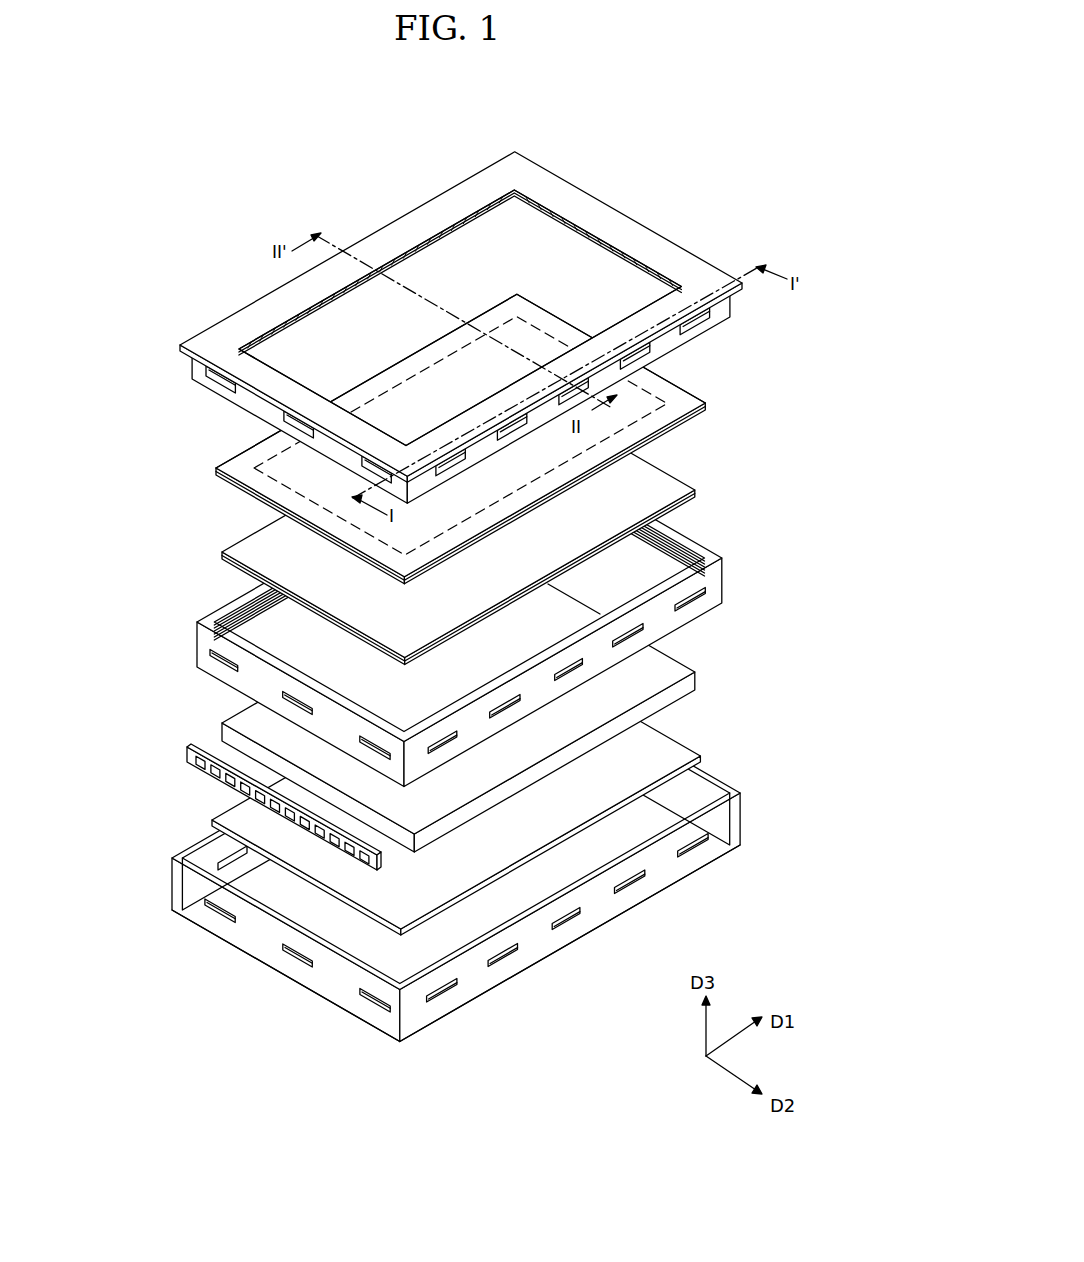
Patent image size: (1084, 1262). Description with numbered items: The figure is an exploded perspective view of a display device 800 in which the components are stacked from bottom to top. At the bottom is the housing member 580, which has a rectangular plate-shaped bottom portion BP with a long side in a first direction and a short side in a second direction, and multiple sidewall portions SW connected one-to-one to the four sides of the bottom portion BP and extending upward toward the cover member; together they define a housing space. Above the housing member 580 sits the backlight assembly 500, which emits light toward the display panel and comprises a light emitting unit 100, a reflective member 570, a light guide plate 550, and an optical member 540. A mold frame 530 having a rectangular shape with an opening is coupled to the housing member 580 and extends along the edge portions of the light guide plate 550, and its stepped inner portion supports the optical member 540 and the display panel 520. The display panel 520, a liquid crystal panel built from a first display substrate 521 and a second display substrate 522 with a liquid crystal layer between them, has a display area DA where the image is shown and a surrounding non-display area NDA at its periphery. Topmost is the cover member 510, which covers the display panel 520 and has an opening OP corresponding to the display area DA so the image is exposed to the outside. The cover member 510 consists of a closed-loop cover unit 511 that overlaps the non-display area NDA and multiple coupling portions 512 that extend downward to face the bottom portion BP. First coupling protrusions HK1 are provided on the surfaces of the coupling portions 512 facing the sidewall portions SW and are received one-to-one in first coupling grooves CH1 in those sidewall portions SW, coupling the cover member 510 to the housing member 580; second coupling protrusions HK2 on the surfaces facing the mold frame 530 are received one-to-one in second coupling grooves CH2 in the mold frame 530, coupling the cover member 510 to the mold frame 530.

The display device 800 is at (607, 175).
The cover member 510 is at (410, 327).
The cover unit 511 is at (203, 343).
The coupling portions 512 is at (194, 372).
The opening OP is at (466, 258).
The first coupling protrusions HK1 is at (218, 388).
The second coupling protrusions HK2 is at (418, 243).
The display panel 520 is at (531, 439).
The first display substrate 521 is at (684, 421).
The second display substrate 522 is at (684, 388).
The display area DA is at (386, 390).
The non-display area NDA is at (418, 366).
The backlight assembly 500 is at (485, 660).
The optical member 540 is at (507, 525).
The mold frame 530 is at (471, 613).
The light guide plate 550 is at (697, 680).
The reflective member 570 is at (684, 742).
The second coupling grooves CH2 is at (218, 662).
The light emitting unit 100 is at (188, 760).
The housing member 580 is at (442, 852).
The sidewall portions SW is at (549, 946).
The bottom portion BP is at (433, 944).
The first coupling grooves CH1 is at (207, 897).